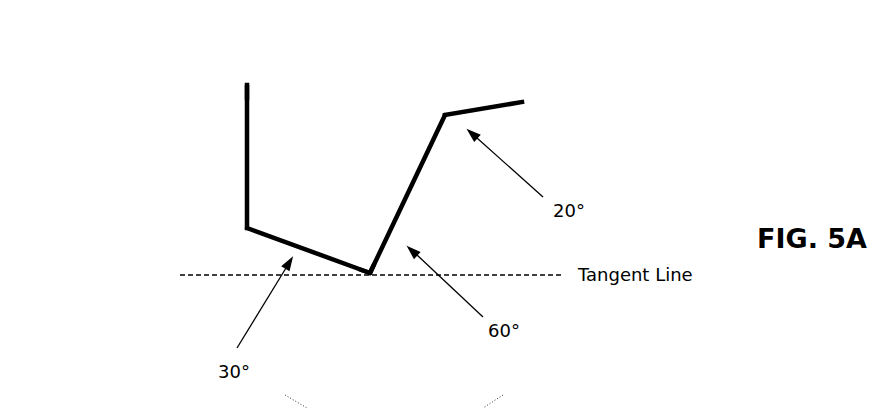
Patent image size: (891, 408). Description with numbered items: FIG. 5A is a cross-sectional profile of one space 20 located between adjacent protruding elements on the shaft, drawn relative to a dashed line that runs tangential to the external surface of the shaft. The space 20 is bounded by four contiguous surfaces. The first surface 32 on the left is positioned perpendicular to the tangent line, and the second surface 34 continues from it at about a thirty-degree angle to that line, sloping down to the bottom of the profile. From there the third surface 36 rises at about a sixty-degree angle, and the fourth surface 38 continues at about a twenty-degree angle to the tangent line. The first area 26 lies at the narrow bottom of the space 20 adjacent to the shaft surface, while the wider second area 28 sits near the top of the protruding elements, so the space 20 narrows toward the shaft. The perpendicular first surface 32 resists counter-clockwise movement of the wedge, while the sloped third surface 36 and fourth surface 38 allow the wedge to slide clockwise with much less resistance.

The space 20 is at (450, 203).
The first area 26 is at (370, 273).
The second area 28 is at (318, 92).
The first surface 32 is at (245, 190).
The second surface 34 is at (300, 247).
The third surface 36 is at (415, 192).
The fourth surface 38 is at (510, 107).